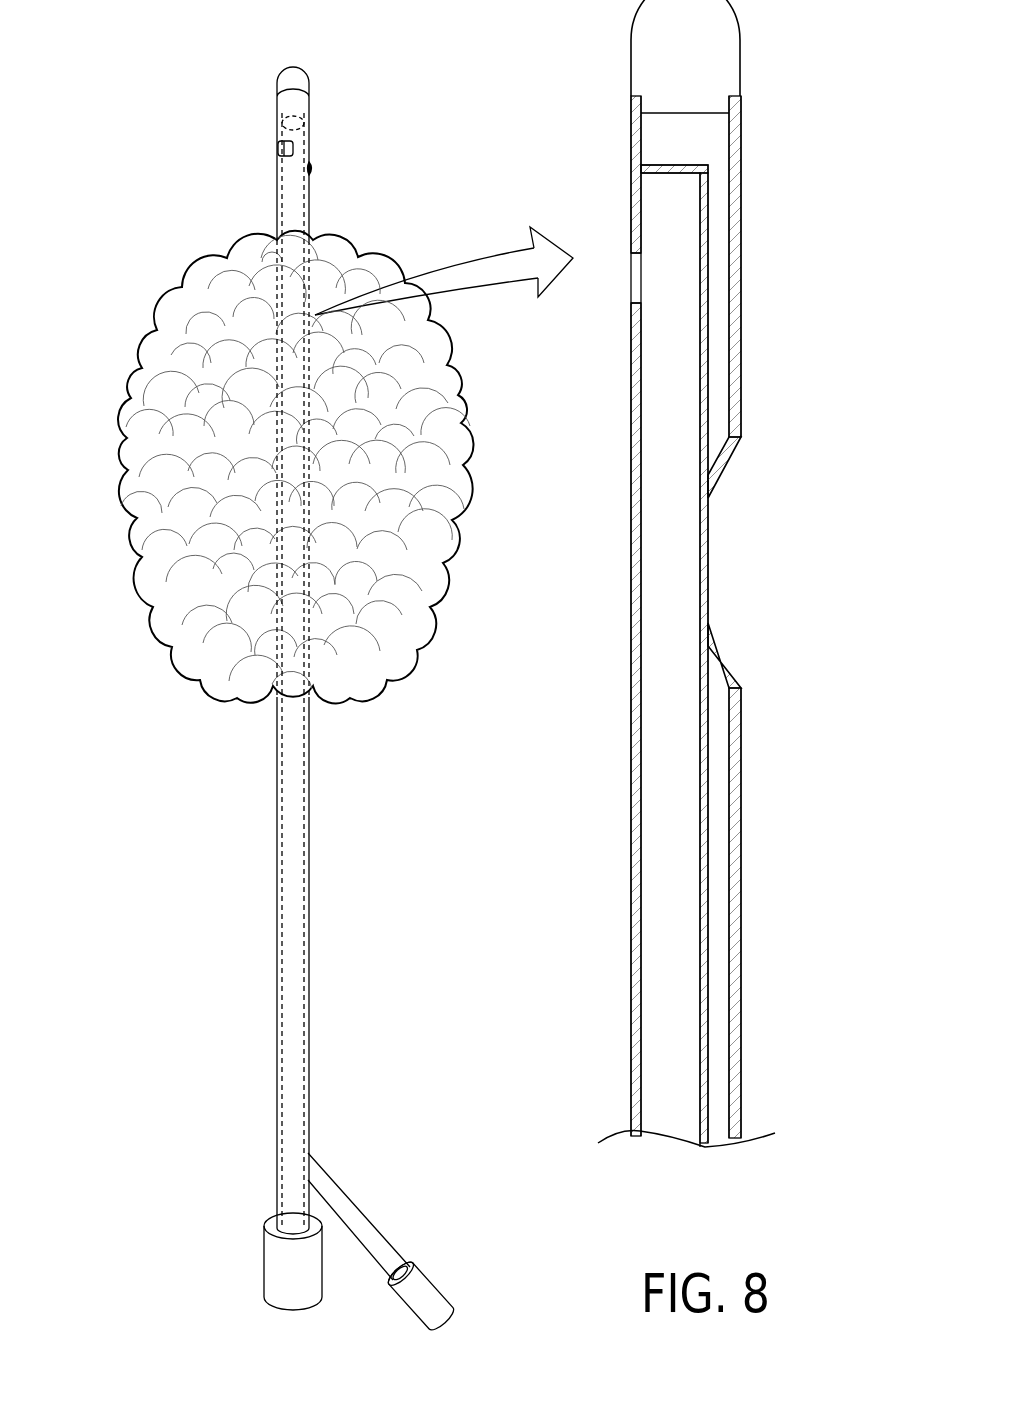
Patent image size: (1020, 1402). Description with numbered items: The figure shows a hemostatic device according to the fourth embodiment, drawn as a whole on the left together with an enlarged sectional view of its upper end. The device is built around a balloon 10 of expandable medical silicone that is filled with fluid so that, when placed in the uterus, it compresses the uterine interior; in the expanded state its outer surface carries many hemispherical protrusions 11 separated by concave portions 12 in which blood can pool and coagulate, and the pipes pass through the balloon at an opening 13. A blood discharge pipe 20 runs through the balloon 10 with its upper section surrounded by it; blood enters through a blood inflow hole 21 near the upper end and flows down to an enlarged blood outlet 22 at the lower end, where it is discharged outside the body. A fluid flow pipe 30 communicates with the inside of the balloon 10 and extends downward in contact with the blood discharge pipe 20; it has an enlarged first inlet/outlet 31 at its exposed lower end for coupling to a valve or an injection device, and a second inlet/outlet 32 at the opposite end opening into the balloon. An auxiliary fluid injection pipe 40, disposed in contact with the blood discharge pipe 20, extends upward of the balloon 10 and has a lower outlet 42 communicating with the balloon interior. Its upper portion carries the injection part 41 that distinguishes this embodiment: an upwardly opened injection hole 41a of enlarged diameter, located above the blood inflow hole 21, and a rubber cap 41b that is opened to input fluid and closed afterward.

The balloon 10 is at (293, 437).
The protrusions 11 is at (128, 400).
The concave portions 12 is at (125, 428).
The insertion hole 13 is at (263, 262).
The blood discharge pipe 20 is at (296, 131).
The blood inflow hole 21 is at (279, 146).
The blood outlet 22 is at (287, 1312).
The fluid flow pipe 30 is at (318, 1103).
The first inlet/outlet 31 is at (455, 1328).
The second inlet/outlet 32 is at (723, 647).
The auxiliary fluid injection pipe 40 is at (312, 170).
The injection part 41 is at (580, 64).
The injection hole 41a is at (714, 128).
The cap 41b is at (716, 66).
The outlet 42 is at (723, 475).